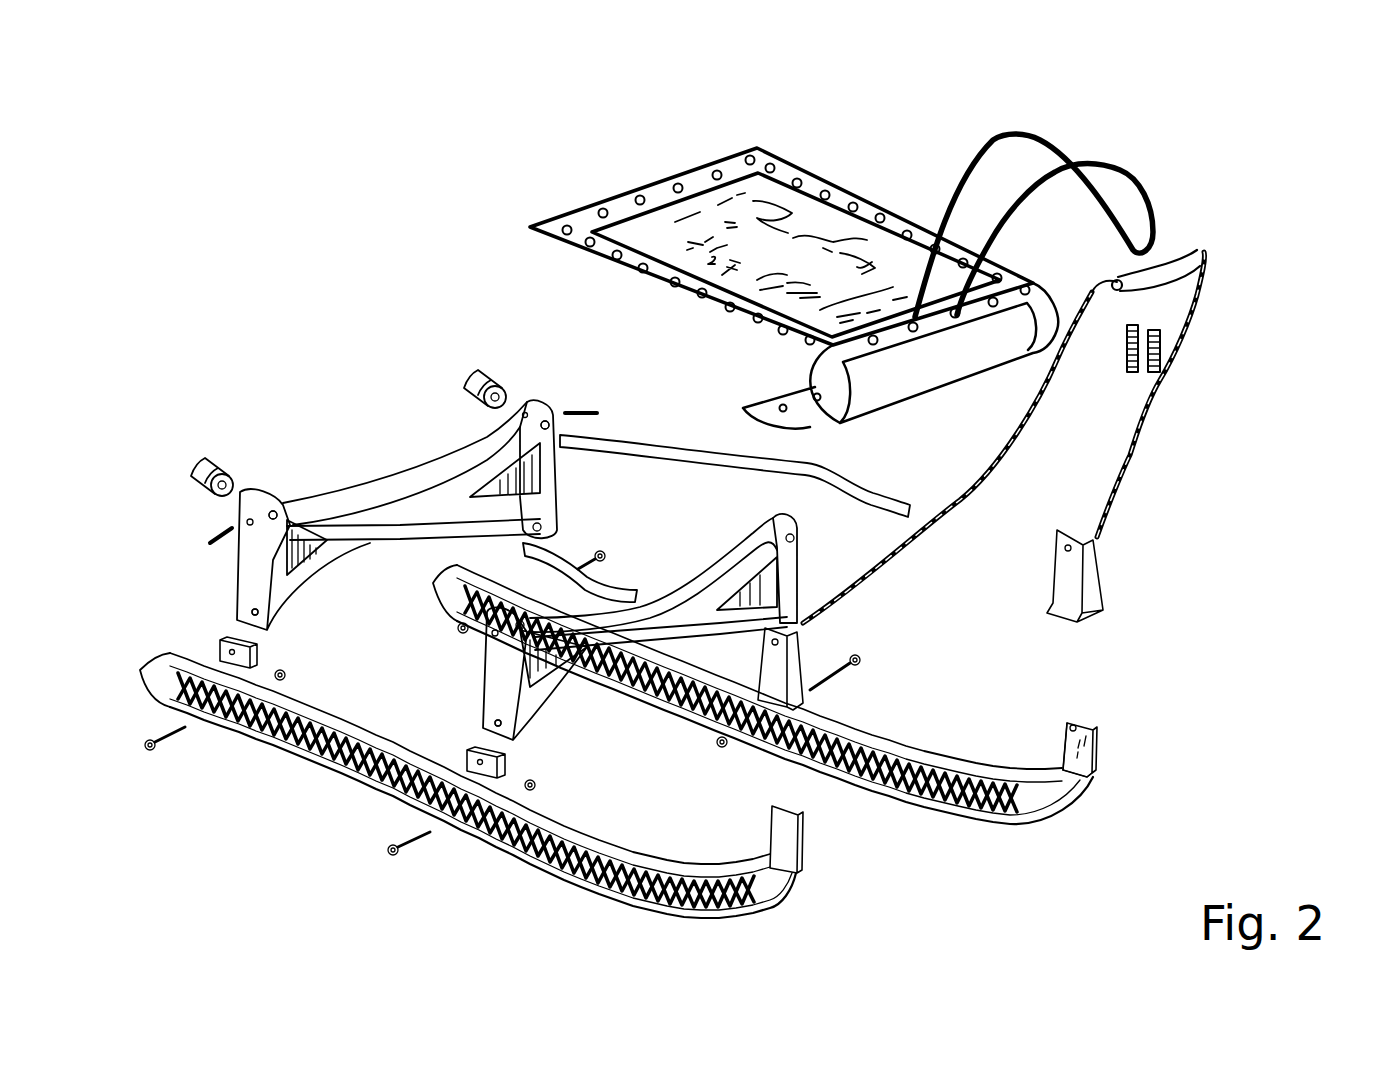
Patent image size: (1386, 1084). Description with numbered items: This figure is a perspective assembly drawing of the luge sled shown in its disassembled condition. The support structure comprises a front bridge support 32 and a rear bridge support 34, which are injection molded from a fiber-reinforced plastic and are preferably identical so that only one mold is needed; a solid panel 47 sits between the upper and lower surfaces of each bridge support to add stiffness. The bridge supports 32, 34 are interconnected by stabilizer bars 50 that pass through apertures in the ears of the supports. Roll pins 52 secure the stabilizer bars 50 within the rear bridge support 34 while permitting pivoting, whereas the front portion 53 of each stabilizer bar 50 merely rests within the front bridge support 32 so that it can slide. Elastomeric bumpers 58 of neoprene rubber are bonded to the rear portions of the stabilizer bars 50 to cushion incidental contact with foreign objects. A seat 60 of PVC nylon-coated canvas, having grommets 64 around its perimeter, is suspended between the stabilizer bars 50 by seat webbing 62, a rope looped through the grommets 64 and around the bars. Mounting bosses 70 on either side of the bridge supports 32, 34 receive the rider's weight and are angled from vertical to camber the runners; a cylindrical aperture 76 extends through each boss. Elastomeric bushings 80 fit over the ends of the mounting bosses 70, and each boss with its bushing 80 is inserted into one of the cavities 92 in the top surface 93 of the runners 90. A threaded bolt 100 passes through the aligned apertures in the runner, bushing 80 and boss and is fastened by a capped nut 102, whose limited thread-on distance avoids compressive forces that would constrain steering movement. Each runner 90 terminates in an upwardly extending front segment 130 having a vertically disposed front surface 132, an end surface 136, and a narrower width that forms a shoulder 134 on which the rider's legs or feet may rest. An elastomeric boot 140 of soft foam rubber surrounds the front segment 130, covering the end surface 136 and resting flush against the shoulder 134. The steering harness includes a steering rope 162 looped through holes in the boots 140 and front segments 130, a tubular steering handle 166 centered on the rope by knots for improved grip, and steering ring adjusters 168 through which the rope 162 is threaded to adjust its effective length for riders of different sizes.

The front bridge support 32 is at (800, 567).
The rear bridge support 34 is at (430, 487).
The solid panel 47 is at (512, 468).
The stabilizer bars 50 is at (690, 447).
The roll pins 52 is at (204, 534).
The front portion of the stabilizer bars 53 is at (623, 587).
The elastomeric bumpers 58 is at (210, 457).
The seat 60 is at (693, 163).
The seat webbing 62 is at (1137, 188).
The grommets 64 is at (825, 194).
The mounting bosses 70 is at (522, 730).
The cylindrical aperture 76 is at (487, 722).
The elastomeric bushings 80 is at (507, 767).
The runners 90 is at (947, 763).
The cavities 92 is at (460, 763).
The top surface 93 is at (353, 733).
The threaded bolt 100 is at (860, 656).
The capped nut 102 is at (722, 747).
The front segment 130 is at (1097, 717).
The front surface 132 is at (1093, 753).
The shoulder 134 is at (1097, 773).
The end surface 136 is at (1073, 723).
The elastomeric boot 140 is at (1100, 587).
The steering rope 162 is at (1193, 340).
The steering handle 166 is at (1178, 262).
The steering ring adjusters 168 is at (1127, 357).